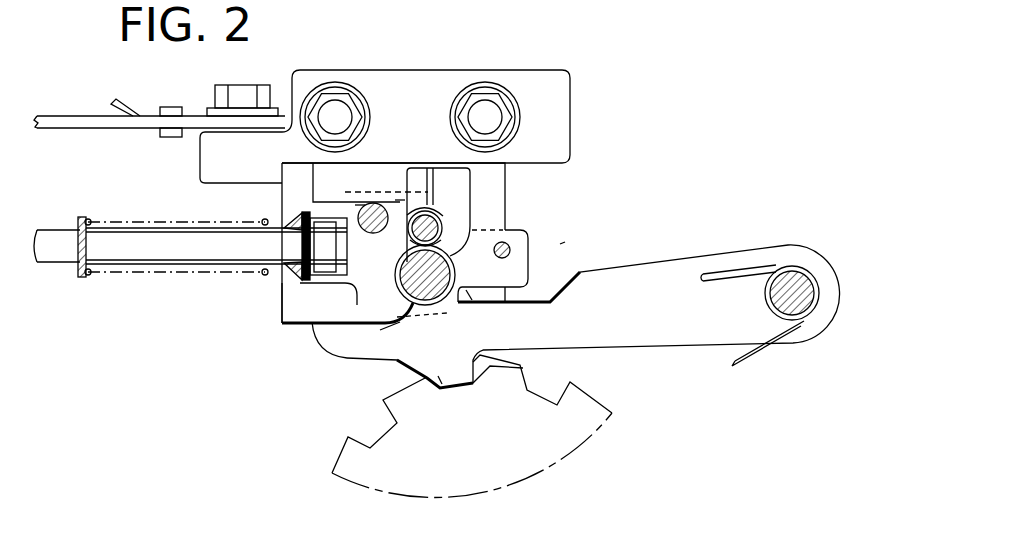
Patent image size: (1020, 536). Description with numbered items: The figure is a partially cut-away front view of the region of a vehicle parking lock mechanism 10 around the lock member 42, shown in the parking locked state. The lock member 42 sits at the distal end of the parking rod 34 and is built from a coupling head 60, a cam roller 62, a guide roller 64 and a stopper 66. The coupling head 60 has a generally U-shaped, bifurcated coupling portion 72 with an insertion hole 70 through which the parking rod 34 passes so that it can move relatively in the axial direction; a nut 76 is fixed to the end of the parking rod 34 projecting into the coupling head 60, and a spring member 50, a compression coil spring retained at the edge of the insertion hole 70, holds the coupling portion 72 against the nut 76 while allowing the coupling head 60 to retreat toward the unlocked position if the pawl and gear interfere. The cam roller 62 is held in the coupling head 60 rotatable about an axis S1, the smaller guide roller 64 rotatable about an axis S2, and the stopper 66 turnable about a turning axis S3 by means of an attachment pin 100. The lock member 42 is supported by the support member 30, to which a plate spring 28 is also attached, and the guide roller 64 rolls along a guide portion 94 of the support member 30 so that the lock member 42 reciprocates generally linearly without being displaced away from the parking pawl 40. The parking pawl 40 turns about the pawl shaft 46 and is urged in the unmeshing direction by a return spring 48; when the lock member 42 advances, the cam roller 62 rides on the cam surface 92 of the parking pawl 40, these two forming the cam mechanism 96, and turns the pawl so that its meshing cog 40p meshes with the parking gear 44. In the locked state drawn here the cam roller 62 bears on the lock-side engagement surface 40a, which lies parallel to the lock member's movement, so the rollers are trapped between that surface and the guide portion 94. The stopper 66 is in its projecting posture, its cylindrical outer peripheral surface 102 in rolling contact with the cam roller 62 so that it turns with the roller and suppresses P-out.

The lock device 10 is at (664, 70).
The plate spring 28 is at (69, 122).
The support member 30 is at (534, 95).
The parking rod 34 is at (58, 245).
The parking pawl 40 is at (650, 335).
The lock-side engagement surface 40a is at (465, 288).
The meshing cog 40p is at (440, 377).
The lock member 42 is at (566, 244).
The parking gear 44 is at (551, 447).
The pawl shaft 46 is at (803, 270).
The return spring 48 is at (728, 268).
The spring member 50 is at (88, 267).
The coupling head 60 is at (328, 299).
The cam roller 62 is at (467, 278).
The guide roller 64 is at (363, 200).
The stopper 66 is at (431, 195).
The insertion hole 70 is at (272, 254).
The coupling portion 72 is at (283, 277).
The nut 76 is at (332, 180).
The cam surface 92 is at (345, 305).
The guide portion 94 is at (398, 197).
The cam mechanism 96 is at (392, 328).
The attachment pin 100 is at (440, 217).
The cylindrical outer peripheral surface 102 is at (433, 238).
The axis S1 is at (402, 290).
The axis S2 is at (368, 235).
The turning axis S3 is at (433, 239).